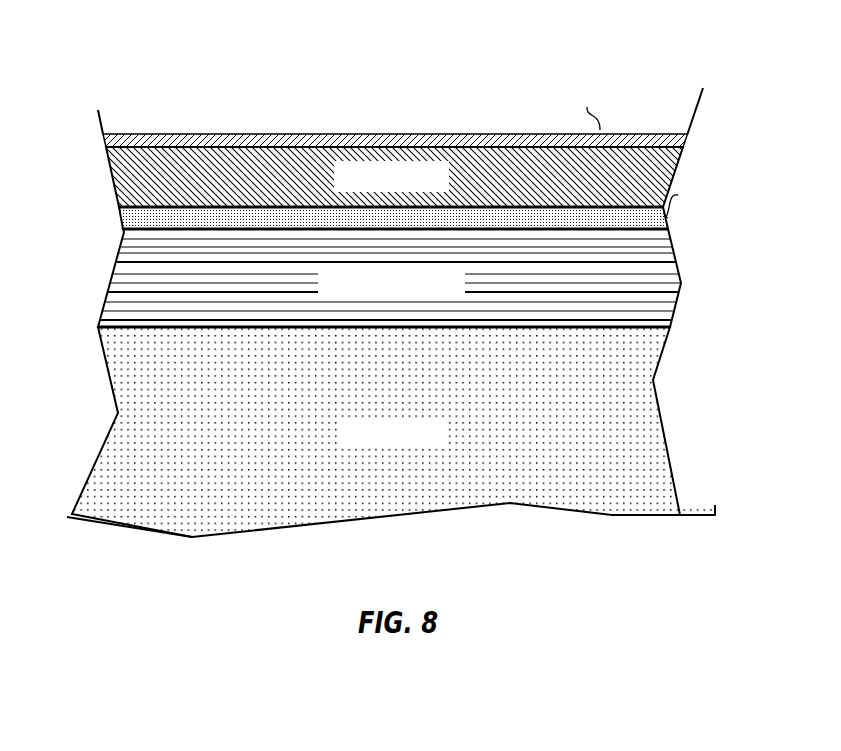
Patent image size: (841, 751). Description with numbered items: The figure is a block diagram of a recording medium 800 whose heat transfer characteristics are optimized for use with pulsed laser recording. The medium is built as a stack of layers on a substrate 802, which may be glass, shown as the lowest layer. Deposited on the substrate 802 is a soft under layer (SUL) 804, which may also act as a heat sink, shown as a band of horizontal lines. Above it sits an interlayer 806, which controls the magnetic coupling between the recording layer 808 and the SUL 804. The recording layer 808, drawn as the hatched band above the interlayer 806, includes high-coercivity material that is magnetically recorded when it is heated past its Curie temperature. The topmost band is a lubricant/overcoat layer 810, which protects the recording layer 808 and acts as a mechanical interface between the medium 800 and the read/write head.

The recording medium 800 is at (399, 271).
The substrate 802 is at (120, 414).
The soft under layer (SUL) 804 is at (122, 282).
The interlayer 806 is at (124, 225).
The recording layer 808 is at (122, 186).
The lubricant/overcoat layer 810 is at (104, 137).